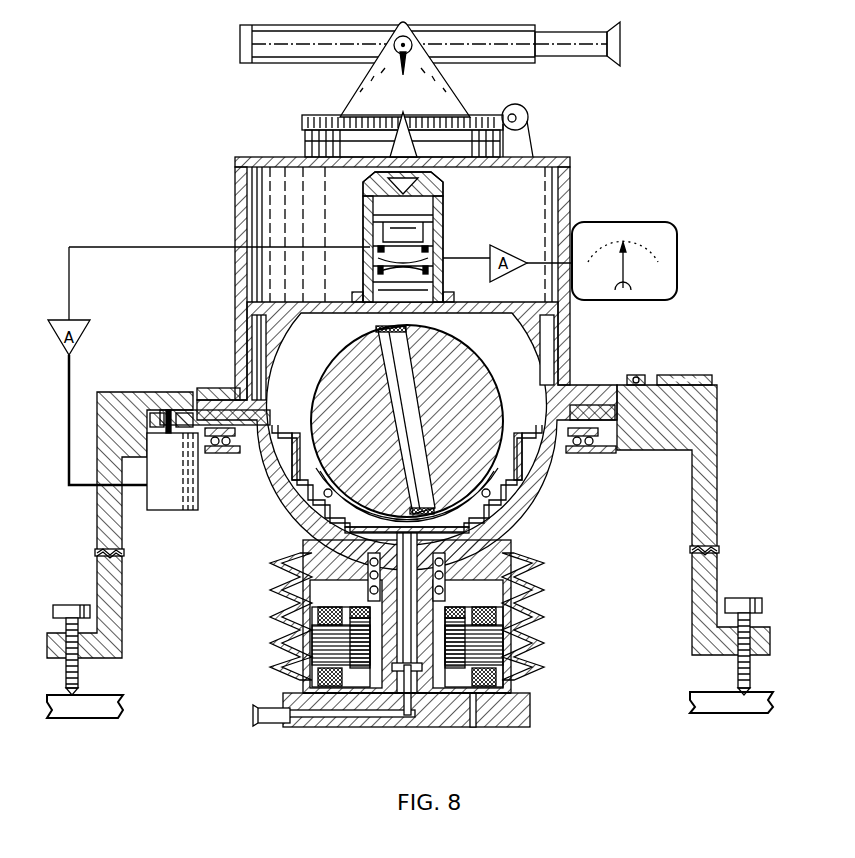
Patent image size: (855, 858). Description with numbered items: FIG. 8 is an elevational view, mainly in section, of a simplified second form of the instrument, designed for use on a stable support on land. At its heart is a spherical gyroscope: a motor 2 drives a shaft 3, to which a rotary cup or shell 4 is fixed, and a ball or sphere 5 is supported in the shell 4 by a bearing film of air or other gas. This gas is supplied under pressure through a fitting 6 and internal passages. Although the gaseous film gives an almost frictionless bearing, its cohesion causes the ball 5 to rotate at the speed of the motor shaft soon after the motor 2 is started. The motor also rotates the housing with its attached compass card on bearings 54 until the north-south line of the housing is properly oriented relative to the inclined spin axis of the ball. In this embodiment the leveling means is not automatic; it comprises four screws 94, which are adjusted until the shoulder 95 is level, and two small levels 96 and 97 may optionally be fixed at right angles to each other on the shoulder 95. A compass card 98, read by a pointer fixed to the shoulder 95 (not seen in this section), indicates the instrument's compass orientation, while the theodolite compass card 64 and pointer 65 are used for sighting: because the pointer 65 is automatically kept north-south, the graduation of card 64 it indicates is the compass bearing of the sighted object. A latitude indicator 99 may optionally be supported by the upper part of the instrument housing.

The motor 2 is at (362, 665).
The shaft 3 is at (446, 679).
The rotary cup or shell 4 is at (503, 496).
The ball or sphere 5 is at (356, 403).
The fitting 6 is at (270, 708).
The bearings 54 is at (570, 446).
The theodolite compass card 64 is at (312, 115).
The pointer 65 is at (405, 113).
The screws 94 is at (750, 668).
The shoulder 95 is at (158, 392).
The level 96 is at (630, 375).
The level 97 is at (704, 375).
The compass card 98 is at (220, 388).
The latitude indicator 99 is at (620, 224).